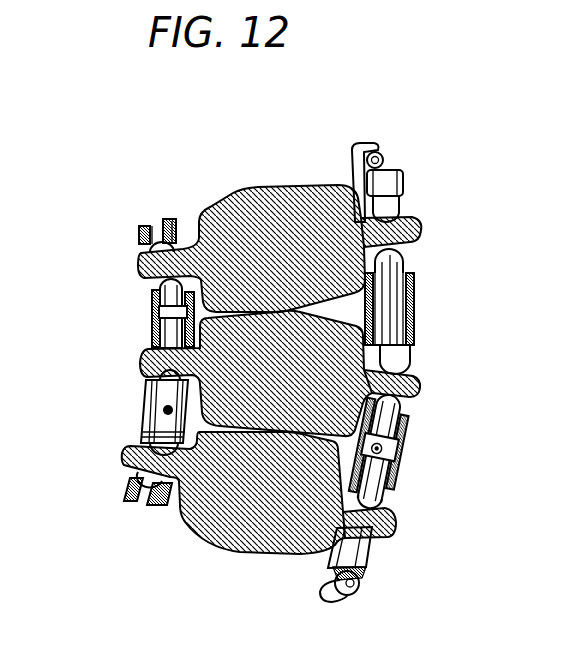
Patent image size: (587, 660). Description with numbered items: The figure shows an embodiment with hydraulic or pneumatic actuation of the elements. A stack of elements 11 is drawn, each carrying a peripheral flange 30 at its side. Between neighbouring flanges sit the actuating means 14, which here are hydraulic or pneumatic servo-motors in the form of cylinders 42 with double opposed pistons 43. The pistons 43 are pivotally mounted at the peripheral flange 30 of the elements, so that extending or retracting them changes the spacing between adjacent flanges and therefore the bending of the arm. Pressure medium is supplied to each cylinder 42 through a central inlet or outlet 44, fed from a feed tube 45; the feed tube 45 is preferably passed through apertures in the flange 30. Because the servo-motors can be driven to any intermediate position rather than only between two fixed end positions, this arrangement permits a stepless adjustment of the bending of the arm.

The brake pad body 11 is at (245, 190).
The peripheral flange 30 is at (417, 229).
The actuating means 14 is at (416, 299).
The double opposed pistons 43 is at (166, 293).
The cylinders 42 is at (160, 314).
The central inlet or outlet 44 is at (384, 450).
The feed tube 45 is at (346, 601).